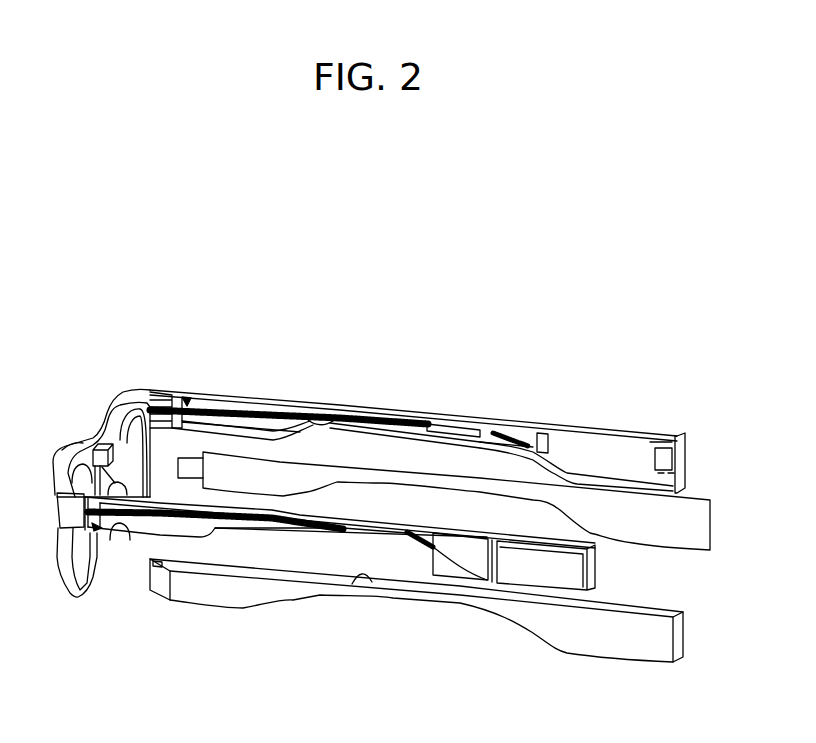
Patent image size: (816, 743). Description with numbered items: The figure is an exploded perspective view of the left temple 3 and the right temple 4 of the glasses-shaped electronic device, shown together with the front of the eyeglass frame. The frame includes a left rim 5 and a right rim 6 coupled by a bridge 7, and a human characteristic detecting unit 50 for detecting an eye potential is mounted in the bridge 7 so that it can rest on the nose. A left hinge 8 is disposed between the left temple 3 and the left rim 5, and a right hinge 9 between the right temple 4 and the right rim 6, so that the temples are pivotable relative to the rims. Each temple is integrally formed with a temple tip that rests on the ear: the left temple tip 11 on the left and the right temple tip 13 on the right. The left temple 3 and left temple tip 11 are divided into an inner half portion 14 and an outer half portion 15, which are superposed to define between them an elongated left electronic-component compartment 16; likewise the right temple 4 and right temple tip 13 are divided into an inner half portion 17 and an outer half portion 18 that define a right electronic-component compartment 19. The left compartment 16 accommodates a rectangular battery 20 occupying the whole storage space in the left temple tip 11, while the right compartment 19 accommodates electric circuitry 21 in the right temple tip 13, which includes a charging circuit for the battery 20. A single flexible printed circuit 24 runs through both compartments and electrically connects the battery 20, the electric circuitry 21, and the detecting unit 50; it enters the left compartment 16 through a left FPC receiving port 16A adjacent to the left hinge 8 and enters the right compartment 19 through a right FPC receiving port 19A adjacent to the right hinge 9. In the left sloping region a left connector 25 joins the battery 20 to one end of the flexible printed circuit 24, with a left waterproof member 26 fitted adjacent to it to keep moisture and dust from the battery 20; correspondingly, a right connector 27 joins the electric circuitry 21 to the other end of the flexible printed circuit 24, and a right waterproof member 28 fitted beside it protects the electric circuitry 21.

The left temple 3 is at (281, 595).
The right temple 4 is at (247, 400).
The left rim 5 is at (53, 458).
The right rim 6 is at (123, 393).
The bridge 7 is at (83, 441).
The left hinge 8 is at (57, 495).
The right hinge 9 is at (157, 397).
The left temple tip 11 is at (640, 650).
The right temple tip 13 is at (658, 434).
The inner half portion 14 is at (209, 524).
The outer half portion 15 is at (234, 594).
The left electronic-component compartment 16 is at (358, 585).
The left FPC receiving port 16A is at (98, 527).
The inner half portion 17 is at (397, 475).
The outer half portion 18 is at (363, 416).
The right electronic-component compartment 19 is at (318, 417).
The right FPC receiving port 19A is at (188, 398).
The battery 20 is at (547, 572).
The electric circuitry 21 is at (594, 452).
The flexible printed circuit 24 is at (282, 412).
The left connector 25 is at (434, 540).
The left waterproof member 26 is at (382, 531).
The right connector 27 is at (541, 440).
The right waterproof member 28 is at (457, 425).
The human characteristic detecting unit 50 is at (97, 443).